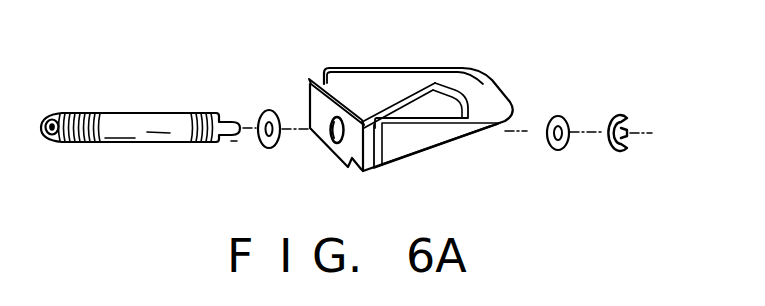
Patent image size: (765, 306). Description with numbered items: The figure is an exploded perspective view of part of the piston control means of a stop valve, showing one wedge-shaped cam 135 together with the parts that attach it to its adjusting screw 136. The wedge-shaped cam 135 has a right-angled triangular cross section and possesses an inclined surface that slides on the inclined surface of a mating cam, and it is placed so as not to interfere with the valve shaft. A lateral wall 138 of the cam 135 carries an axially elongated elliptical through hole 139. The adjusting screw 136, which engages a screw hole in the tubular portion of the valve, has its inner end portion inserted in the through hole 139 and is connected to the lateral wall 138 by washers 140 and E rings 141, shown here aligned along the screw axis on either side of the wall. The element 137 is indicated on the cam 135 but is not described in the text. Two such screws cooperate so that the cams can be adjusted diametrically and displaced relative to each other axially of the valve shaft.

The wedge-shaped cam 135 is at (485, 93).
The adjusting screw 136 is at (140, 113).
The bracket lower flange 137 is at (452, 141).
The lateral wall 138 is at (315, 100).
The through hole 139 is at (339, 118).
The washer 140 is at (265, 113).
The E ring 141 is at (620, 115).